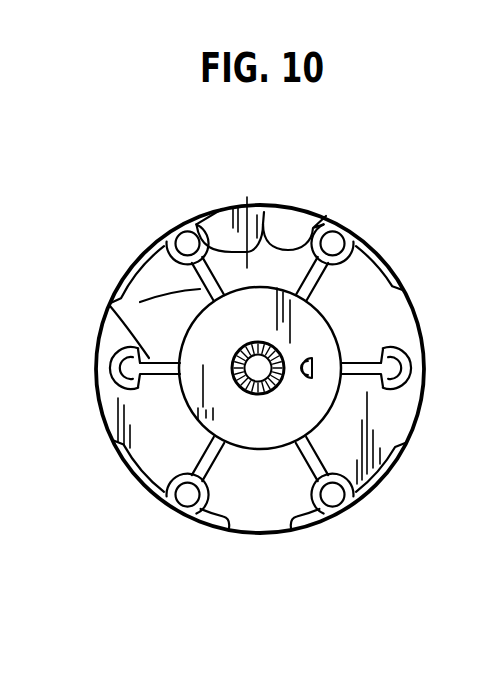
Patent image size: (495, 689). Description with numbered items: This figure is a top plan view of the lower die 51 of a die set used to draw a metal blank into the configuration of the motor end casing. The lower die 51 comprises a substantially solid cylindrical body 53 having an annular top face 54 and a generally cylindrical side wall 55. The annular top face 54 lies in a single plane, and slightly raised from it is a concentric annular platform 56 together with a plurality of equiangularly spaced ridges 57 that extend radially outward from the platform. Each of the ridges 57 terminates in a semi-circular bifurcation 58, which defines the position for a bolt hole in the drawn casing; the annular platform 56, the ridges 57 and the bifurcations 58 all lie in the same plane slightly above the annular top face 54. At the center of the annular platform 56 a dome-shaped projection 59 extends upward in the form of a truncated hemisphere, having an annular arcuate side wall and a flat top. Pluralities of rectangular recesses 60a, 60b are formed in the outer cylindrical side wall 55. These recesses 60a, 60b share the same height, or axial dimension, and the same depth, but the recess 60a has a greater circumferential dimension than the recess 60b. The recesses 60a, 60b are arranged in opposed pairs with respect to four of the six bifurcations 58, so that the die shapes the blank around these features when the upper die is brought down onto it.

The lower die 51 is at (382, 224).
The cylindrical body 53 is at (109, 304).
The annular top face 54 is at (400, 406).
The cylindrical side wall 55 is at (247, 197).
The annular platform 56 is at (260, 430).
The ridges 57 is at (140, 297).
The semi-circular bifurcation 58 is at (257, 240).
The dome-shaped projection 59 is at (256, 370).
The rectangular recess 60a is at (396, 462).
The rectangular recess 60b is at (324, 518).